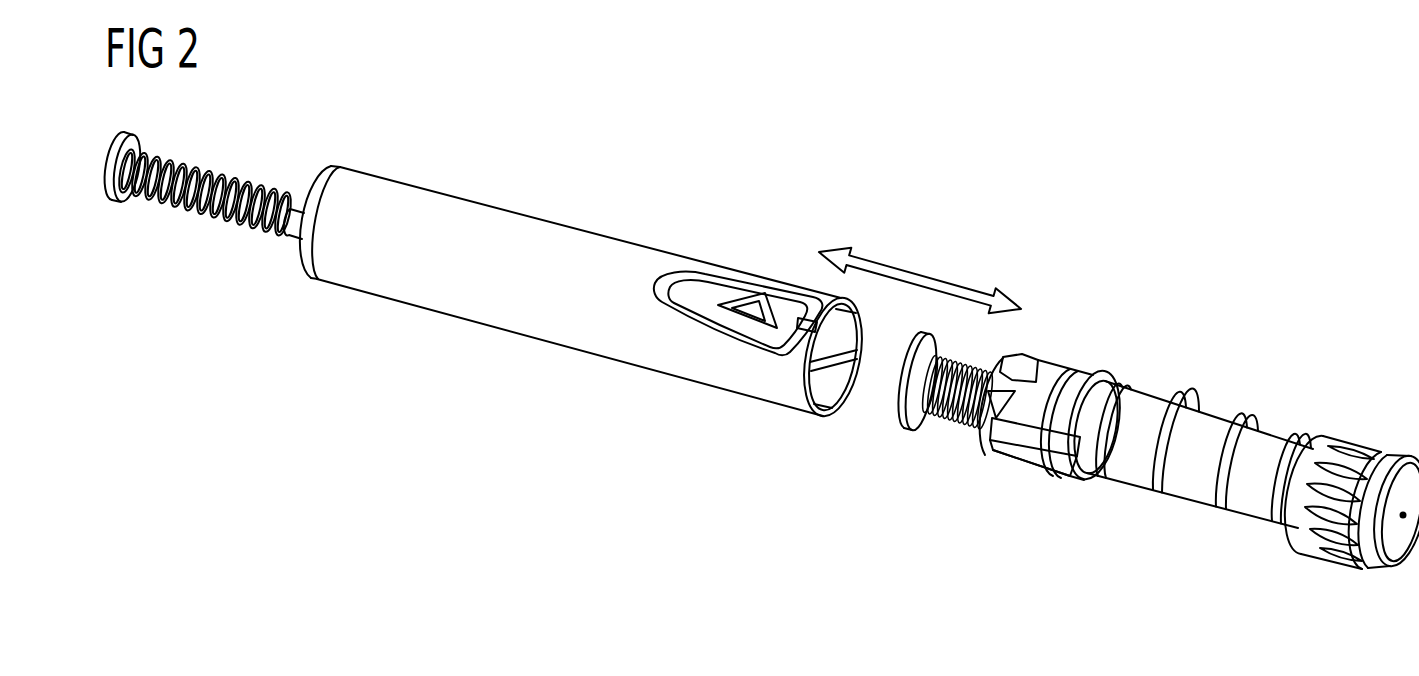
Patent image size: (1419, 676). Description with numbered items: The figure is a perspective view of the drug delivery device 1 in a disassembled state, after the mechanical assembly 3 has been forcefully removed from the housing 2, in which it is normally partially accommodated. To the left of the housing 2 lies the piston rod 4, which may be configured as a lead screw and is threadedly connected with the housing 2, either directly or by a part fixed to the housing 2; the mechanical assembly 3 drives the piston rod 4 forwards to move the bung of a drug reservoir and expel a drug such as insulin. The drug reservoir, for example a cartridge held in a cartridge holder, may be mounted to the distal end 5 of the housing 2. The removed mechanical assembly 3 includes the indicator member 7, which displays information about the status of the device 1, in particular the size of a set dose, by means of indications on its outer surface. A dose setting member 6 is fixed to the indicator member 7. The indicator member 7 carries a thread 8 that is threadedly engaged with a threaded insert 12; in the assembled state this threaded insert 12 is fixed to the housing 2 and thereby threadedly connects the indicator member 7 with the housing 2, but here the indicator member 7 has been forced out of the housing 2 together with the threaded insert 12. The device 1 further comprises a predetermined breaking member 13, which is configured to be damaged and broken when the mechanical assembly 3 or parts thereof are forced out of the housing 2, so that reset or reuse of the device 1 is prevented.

The drug delivery device 1 is at (489, 135).
The housing 2 is at (497, 303).
The mechanical assembly 3 is at (1200, 398).
The piston rod 4 is at (233, 183).
The distal end 5 is at (327, 178).
The dose setting member 6 is at (1345, 462).
The indicator member 7 is at (1183, 484).
The thread 8 is at (1153, 476).
The threaded insert 12 is at (1029, 448).
The predetermined breaking member 13 is at (1248, 504).